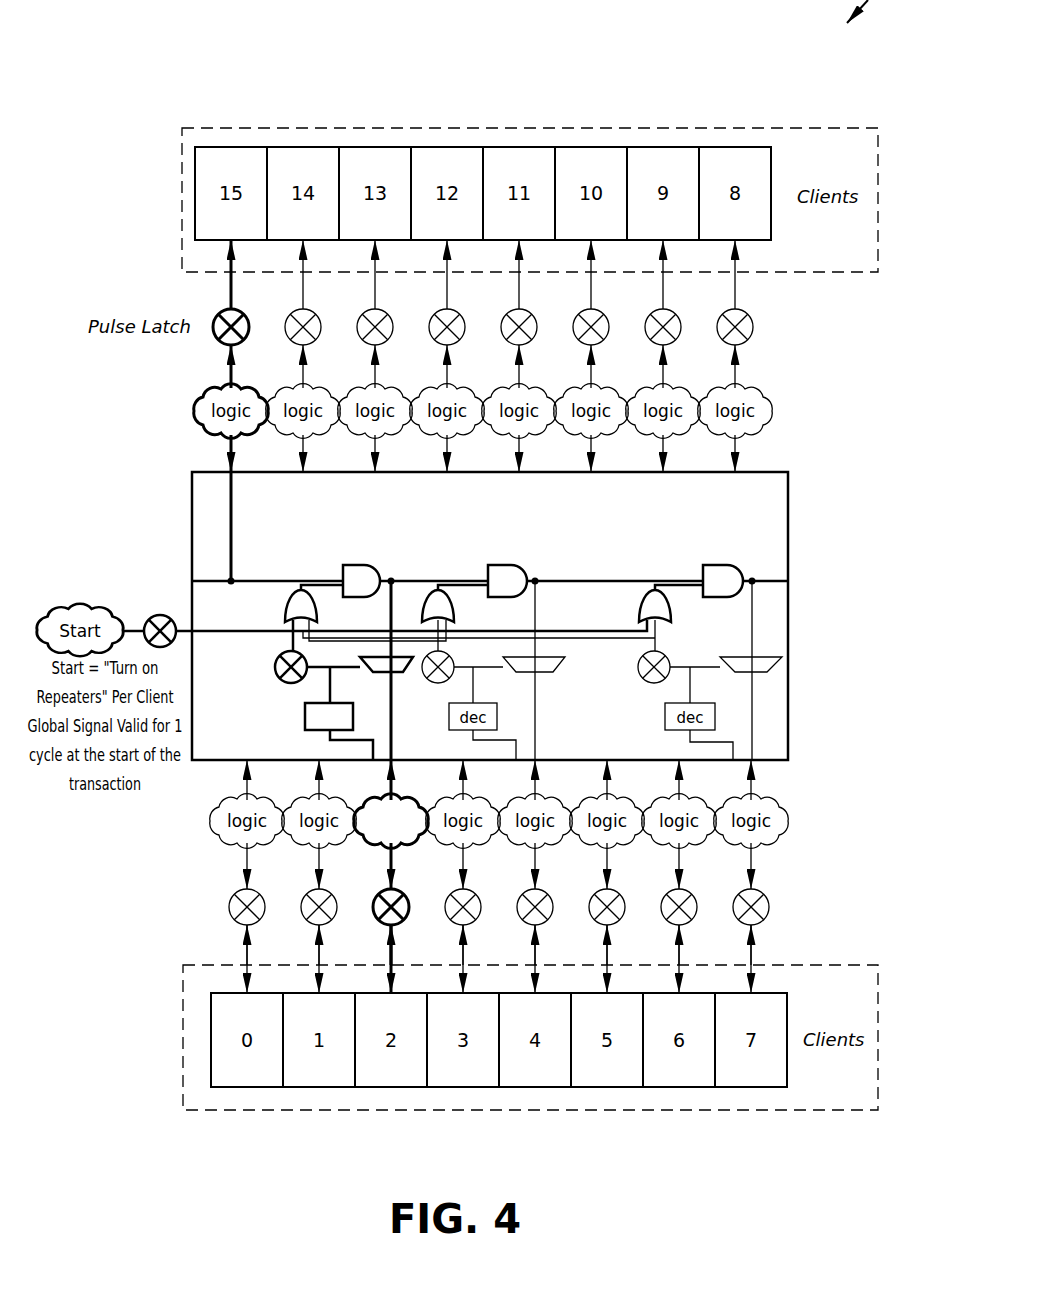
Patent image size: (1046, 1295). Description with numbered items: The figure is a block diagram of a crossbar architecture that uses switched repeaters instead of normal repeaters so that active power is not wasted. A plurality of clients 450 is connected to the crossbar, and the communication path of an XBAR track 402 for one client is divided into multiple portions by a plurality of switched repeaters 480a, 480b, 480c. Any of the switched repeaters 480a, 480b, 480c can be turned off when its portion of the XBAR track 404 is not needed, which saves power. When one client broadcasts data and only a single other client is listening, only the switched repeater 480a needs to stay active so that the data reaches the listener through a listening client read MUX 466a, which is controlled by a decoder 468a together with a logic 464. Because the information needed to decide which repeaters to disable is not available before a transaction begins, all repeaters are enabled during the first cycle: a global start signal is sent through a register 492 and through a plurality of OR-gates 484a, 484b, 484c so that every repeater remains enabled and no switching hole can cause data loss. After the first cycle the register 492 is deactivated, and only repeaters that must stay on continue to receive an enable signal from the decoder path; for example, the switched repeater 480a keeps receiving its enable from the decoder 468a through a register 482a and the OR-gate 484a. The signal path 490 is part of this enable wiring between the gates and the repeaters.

The plurality of clients 450 is at (757, 128).
The XBAR track 402 is at (757, 472).
The XBAR track 404 is at (557, 581).
The switched repeater 480a is at (357, 565).
The switched repeater 480b is at (505, 565).
The switched repeater 480c is at (725, 565).
The OR-gate 484a is at (285, 604).
The OR-gate 484b is at (454, 608).
The OR-gate 484c is at (671, 608).
The register 482a is at (277, 661).
The decoder 468a is at (305, 718).
The listening client read MUX 466a is at (401, 672).
The repeater enable signal line 490 is at (403, 631).
The register 492 is at (153, 618).
The logic 464 is at (400, 843).